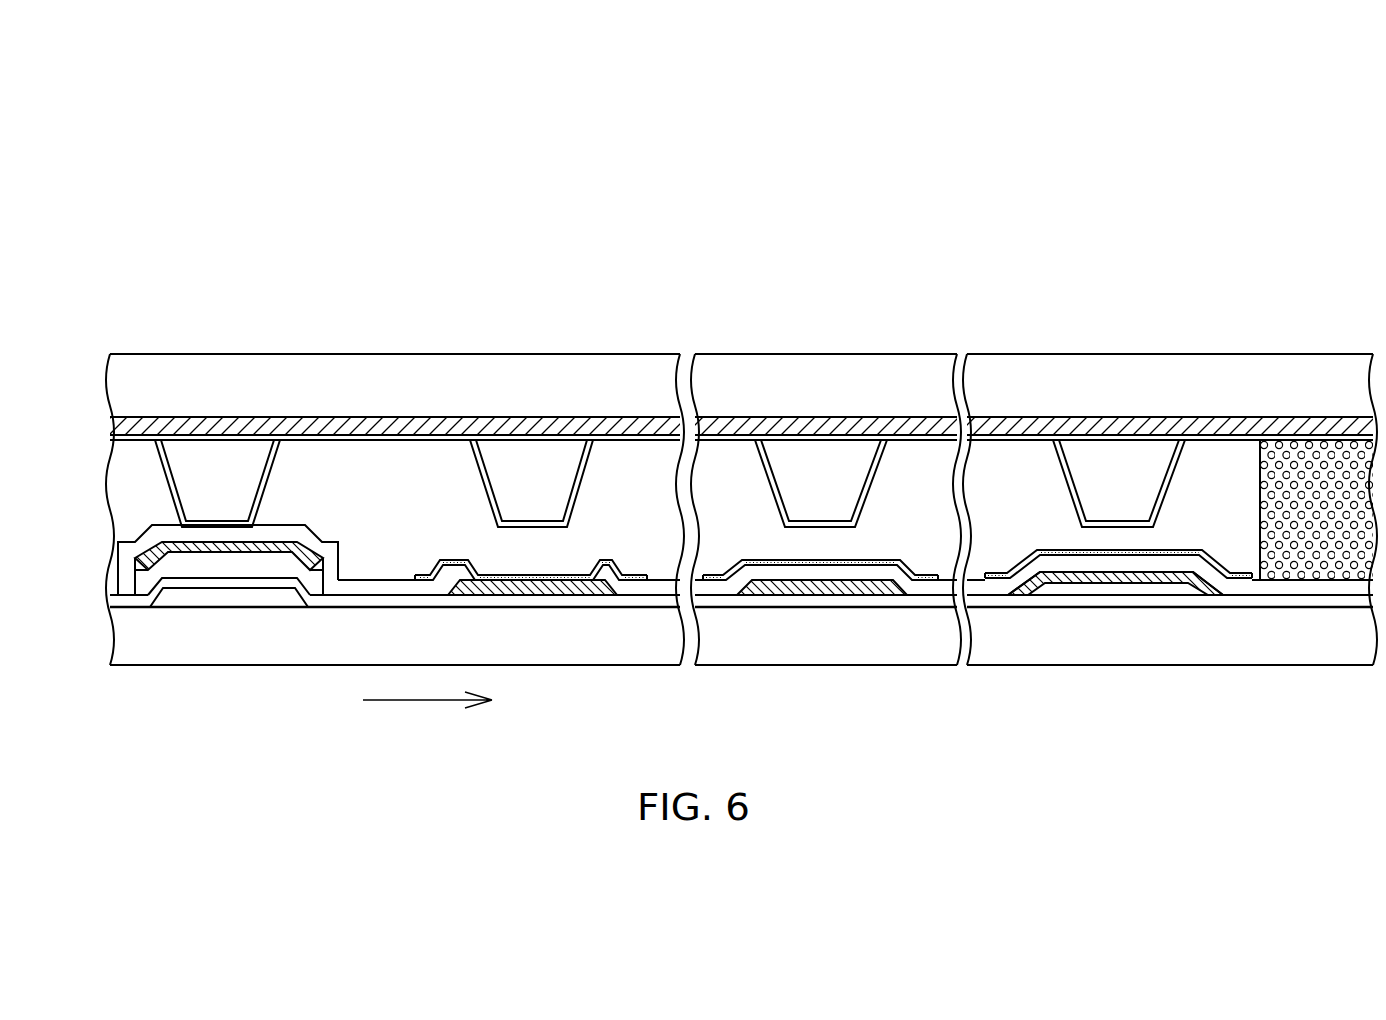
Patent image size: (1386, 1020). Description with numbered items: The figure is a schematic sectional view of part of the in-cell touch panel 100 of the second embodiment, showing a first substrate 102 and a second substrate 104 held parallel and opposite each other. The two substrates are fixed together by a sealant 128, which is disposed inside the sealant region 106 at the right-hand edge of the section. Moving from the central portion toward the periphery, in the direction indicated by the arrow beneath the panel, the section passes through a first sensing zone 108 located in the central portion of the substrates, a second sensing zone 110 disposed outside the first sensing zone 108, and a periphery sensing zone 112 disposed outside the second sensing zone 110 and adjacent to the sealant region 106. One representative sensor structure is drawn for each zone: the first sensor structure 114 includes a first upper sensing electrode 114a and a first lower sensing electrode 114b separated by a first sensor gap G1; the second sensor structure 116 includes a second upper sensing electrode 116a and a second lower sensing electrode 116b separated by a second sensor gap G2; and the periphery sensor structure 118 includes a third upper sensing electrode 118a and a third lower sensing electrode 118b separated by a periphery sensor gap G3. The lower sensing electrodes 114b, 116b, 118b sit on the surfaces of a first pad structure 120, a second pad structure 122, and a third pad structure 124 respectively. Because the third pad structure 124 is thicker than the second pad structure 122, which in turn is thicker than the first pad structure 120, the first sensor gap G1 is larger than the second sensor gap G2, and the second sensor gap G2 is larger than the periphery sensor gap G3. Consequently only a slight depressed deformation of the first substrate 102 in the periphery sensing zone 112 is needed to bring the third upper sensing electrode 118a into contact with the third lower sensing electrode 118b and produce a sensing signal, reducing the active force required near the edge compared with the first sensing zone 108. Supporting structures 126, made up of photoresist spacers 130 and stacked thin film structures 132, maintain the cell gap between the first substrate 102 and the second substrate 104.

The in-cell touch panel 100 is at (1196, 207).
The first substrate 102 is at (420, 397).
The second substrate 104 is at (420, 645).
The sealant region 106 is at (1262, 343).
The first sensing zone 108 is at (110, 343).
The second sensing zone 110 is at (695, 343).
The periphery sensing zone 112 is at (967, 343).
The first sensor structure 114 is at (447, 510).
The first upper sensing electrode 114a is at (574, 500).
The first lower sensing electrode 114b is at (448, 561).
The second sensor structure 116 is at (763, 508).
The second upper sensing electrode 116a is at (857, 503).
The second lower sensing electrode 116b is at (773, 559).
The periphery sensor structure 118 is at (1061, 508).
The third upper sensing electrode 118a is at (1155, 503).
The third lower sensing electrode 118b is at (1050, 551).
The first pad structure 120 is at (586, 627).
The second pad structure 122 is at (825, 620).
The third pad structure 124 is at (1086, 620).
The supporting structure 126 is at (131, 511).
The sealant 128 is at (1329, 509).
The photoresist spacer 130 is at (237, 502).
The stacked thin film structure 132 is at (293, 505).
The first sensor gap G1 is at (525, 528).
The second sensor gap G2 is at (843, 528).
The periphery sensor gap G3 is at (1140, 528).